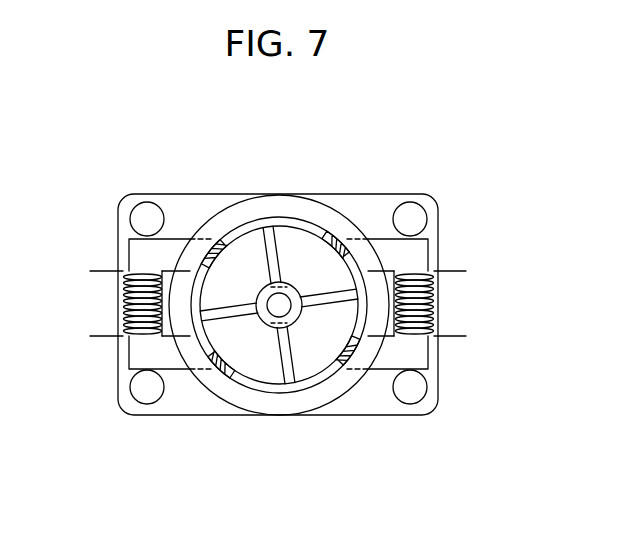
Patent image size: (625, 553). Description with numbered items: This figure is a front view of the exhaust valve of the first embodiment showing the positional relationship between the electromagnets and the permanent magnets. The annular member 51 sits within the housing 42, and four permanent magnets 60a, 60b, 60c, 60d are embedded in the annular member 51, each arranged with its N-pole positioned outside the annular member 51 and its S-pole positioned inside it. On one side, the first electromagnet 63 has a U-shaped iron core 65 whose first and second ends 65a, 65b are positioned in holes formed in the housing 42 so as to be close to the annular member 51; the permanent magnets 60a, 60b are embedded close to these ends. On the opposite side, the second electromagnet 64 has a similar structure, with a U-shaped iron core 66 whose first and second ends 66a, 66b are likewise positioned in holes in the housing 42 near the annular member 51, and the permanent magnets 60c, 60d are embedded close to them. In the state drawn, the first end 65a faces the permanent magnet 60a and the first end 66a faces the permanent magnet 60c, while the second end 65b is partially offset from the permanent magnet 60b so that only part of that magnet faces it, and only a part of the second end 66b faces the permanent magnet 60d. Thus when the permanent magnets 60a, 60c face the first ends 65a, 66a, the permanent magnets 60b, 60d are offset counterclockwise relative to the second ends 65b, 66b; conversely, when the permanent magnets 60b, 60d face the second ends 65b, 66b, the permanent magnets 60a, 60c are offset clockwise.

The housing 42 is at (231, 204).
The annular member 51 is at (275, 215).
The permanent magnet 60a is at (342, 368).
The permanent magnet 60b is at (334, 235).
The permanent magnet 60c is at (215, 243).
The permanent magnet 60d is at (230, 375).
The first electromagnet 63 is at (440, 248).
The second electromagnet 64 is at (123, 357).
The iron core 65 is at (418, 353).
The first end 65a is at (360, 350).
The second end 65b is at (363, 235).
The iron core 66 is at (138, 262).
The first end 66a is at (190, 262).
The second end 66b is at (193, 363).